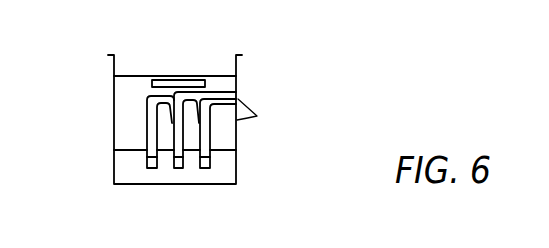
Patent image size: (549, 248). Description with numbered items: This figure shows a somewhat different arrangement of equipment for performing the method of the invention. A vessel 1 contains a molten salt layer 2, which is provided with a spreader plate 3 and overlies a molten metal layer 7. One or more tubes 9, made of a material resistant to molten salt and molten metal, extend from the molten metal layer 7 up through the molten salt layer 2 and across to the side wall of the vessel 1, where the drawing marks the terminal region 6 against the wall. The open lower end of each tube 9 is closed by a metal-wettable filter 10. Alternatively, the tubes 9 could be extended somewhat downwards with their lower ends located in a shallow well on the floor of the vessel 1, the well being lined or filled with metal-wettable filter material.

The vessel 1 is at (211, 185).
The molten salt layer 2 is at (130, 113).
The spreader plate 3 is at (178, 79).
The terminal connection 6 is at (243, 109).
The molten metal layer 7 is at (132, 172).
The tube 9 is at (204, 134).
The metal-wettable filter 10 is at (157, 168).